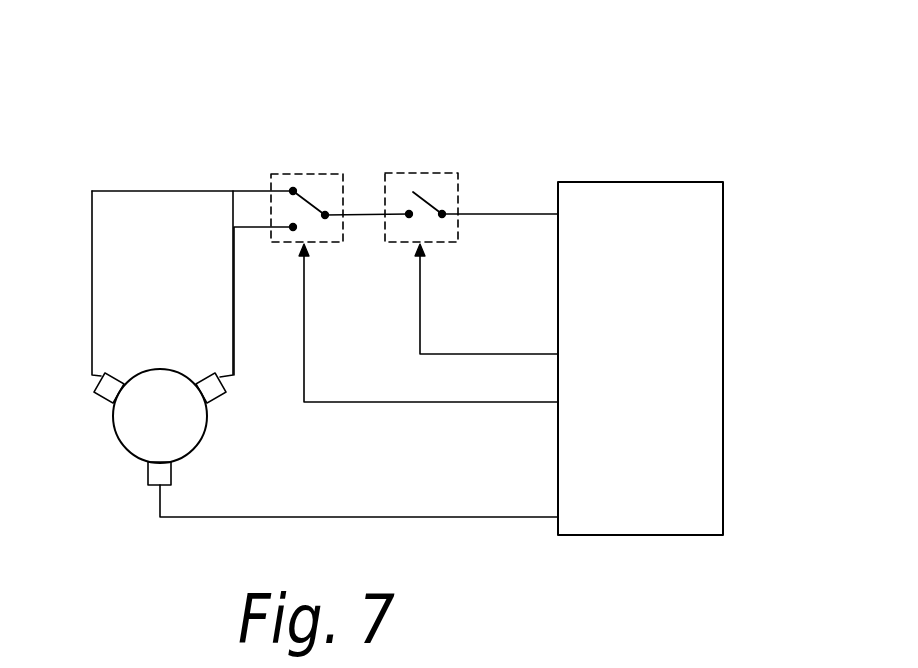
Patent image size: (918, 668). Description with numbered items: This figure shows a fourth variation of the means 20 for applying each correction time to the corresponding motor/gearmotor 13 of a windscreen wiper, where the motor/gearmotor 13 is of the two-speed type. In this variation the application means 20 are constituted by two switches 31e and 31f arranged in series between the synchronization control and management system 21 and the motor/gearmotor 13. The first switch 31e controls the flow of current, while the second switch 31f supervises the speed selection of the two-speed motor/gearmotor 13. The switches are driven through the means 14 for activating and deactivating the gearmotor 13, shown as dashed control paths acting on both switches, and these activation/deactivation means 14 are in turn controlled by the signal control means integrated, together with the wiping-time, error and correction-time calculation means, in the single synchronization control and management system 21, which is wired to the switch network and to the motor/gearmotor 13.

The electric motor/gearmotor 13 is at (120, 445).
The means for activating/deactivating the gearmotor 14 is at (330, 244).
The means for applying the correction times 20 is at (267, 177).
The synchronization control and management system 21 is at (666, 184).
The first switch 31e is at (427, 202).
The second switch 31f is at (306, 197).